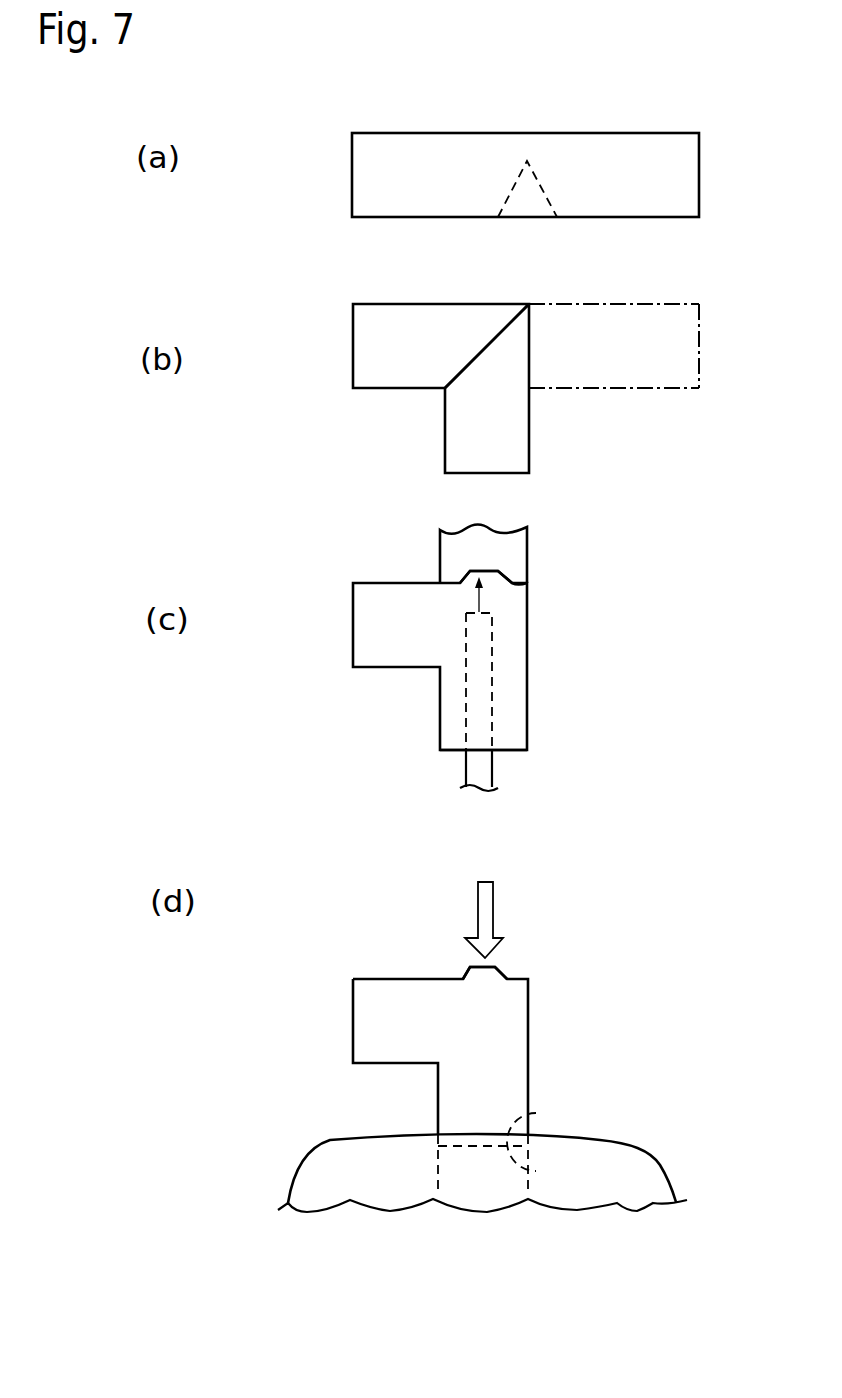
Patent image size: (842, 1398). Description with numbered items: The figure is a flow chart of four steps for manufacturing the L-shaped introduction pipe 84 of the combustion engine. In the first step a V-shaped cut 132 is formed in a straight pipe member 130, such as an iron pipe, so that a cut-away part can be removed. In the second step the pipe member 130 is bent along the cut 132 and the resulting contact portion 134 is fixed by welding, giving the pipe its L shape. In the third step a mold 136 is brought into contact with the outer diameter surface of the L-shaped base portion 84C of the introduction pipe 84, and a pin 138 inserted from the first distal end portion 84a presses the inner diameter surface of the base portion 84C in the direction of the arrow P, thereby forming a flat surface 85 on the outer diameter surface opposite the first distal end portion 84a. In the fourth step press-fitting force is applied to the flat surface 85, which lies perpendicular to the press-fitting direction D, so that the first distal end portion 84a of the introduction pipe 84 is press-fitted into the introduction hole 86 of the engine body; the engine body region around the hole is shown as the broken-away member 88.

The pipe member 130 is at (614, 133).
The V-shaped cut 132 is at (545, 196).
The contact portion 134 is at (480, 355).
The mold 136 is at (452, 556).
The flat surface 85 is at (485, 569).
The L-shaped base portion 84C is at (518, 582).
The pressing direction arrow P is at (480, 600).
The introduction pipe 84 is at (528, 683).
The first distal end portion 84a is at (450, 752).
The pin 138 is at (495, 770).
The press-fitting direction D is at (488, 903).
The introduction hole 86 is at (548, 1113).
The base member 88 is at (633, 1170).